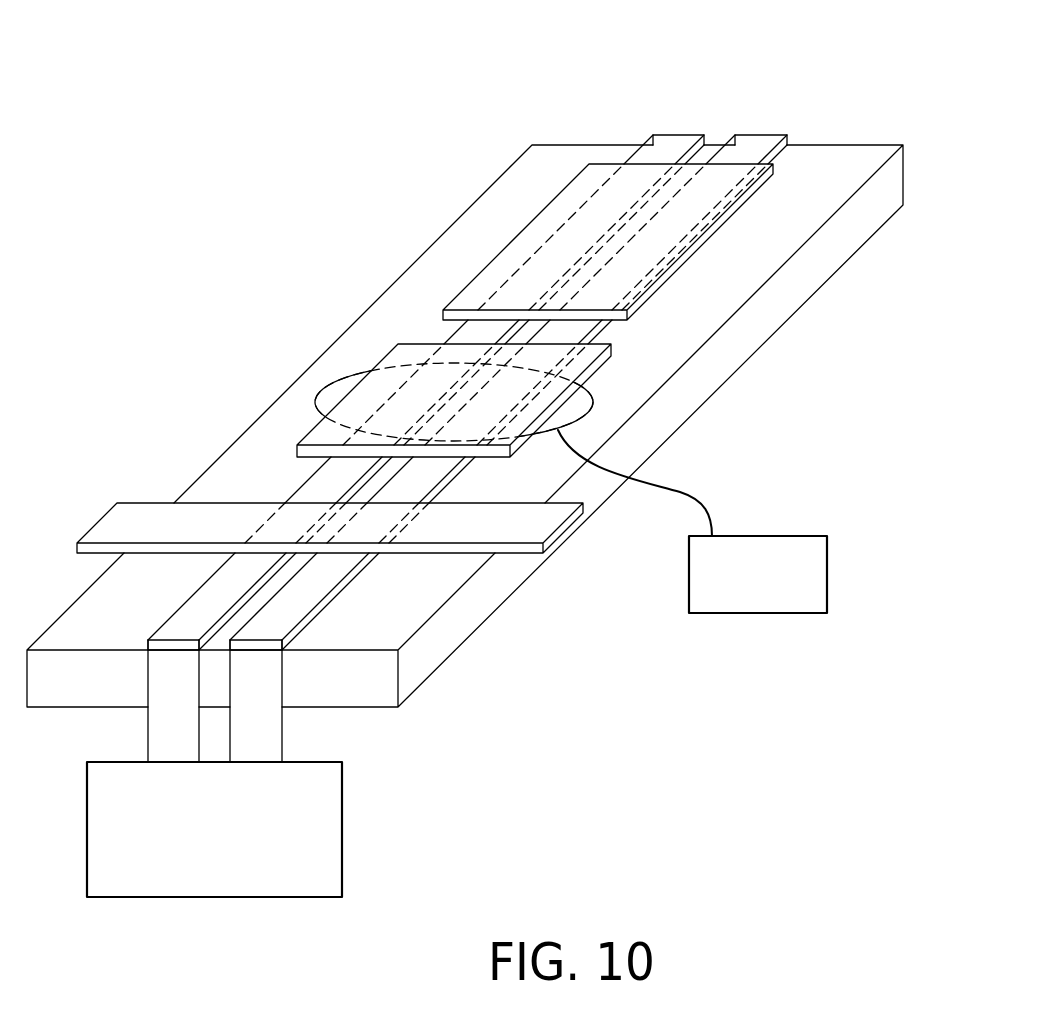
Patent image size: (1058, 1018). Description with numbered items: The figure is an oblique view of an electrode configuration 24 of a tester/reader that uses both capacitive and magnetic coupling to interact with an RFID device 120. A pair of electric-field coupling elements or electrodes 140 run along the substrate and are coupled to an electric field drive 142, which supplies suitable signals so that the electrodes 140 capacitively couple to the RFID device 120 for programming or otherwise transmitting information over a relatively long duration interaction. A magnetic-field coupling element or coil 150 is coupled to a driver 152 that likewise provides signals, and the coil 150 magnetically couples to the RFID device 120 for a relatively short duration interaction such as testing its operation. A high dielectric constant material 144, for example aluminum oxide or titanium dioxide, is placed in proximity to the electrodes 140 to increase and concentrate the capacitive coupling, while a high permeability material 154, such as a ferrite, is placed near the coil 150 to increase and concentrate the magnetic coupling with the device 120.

The electrode configuration 24 is at (390, 325).
The RFID device 120 is at (87, 507).
The electric-field coupling elements 140 is at (760, 135).
The electric field drive 142 is at (342, 853).
The high dielectric constant material 144 is at (725, 227).
The magnetic-field coupling element 150 is at (593, 405).
The driver 152 is at (800, 536).
The high permeability material 154 is at (615, 347).